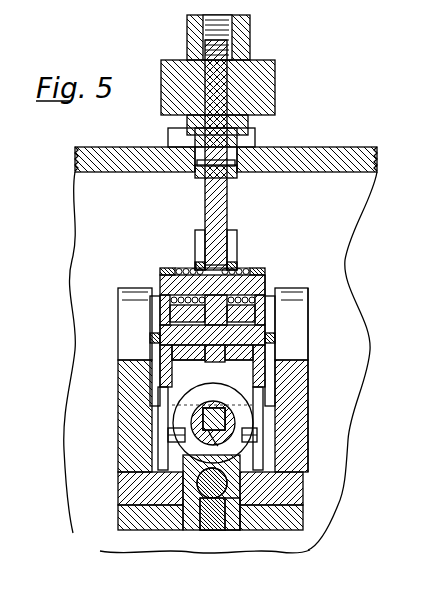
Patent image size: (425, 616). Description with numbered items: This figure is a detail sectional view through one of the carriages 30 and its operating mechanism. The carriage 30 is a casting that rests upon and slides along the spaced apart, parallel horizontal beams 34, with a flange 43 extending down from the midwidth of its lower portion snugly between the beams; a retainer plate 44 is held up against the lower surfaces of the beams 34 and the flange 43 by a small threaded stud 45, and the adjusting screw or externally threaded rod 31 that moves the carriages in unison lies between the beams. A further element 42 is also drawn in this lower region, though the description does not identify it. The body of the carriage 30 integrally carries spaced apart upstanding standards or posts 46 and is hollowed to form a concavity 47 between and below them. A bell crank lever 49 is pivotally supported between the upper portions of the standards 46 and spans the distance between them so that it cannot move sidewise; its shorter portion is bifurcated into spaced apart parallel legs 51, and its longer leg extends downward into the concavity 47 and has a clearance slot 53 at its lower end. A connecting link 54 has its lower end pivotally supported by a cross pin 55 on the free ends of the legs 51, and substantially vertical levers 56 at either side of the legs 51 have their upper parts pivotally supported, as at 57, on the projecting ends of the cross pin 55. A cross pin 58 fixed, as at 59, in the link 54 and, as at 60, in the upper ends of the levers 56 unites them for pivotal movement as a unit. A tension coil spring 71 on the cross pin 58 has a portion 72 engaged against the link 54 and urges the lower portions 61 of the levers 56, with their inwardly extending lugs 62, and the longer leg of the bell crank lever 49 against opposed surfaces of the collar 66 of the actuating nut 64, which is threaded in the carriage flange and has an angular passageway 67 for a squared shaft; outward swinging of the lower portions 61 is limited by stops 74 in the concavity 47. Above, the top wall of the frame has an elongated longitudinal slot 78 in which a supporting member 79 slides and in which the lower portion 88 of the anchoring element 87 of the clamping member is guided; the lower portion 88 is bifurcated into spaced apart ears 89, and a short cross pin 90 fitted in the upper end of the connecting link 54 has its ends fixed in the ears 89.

The anchoring element 87 is at (248, 92).
The lower portion of anchoring element 88 is at (255, 136).
The supporting member 79 is at (285, 147).
The elongated longitudinally extending slot 78 is at (240, 172).
The spaced apart ears 89 is at (198, 178).
The short cross pin 90 is at (200, 168).
The connecting link 54 is at (218, 212).
The length or portion of coil spring 72 is at (237, 242).
The cross pin 58 is at (196, 262).
The fixing of cross pin ends in vertical levers 60 is at (208, 266).
The tension coil spring 71 is at (262, 270).
The bell crank lever 49 is at (162, 280).
The fixing of cross pin in connecting link 59 is at (266, 287).
The upstanding standards or posts 46 is at (118, 294).
The spaced apart parallel legs 51 is at (152, 320).
The pivotal support of vertical levers 57 is at (165, 352).
The substantially vertical levers 56 is at (166, 376).
The cross pin 55 is at (214, 408).
The collar 66 is at (200, 362).
The actuating nut 64 is at (228, 362).
The clearance slot 53 is at (175, 405).
The lower portions of vertical levers 61 is at (240, 414).
The carriage 30 is at (238, 428).
The inwardly extending lug 62 is at (170, 433).
The angular passageway 67 is at (212, 436).
The stops 74 is at (160, 456).
The concavity 47 is at (308, 455).
The horizontal beams 34 is at (118, 480).
The bottom plate 42 is at (118, 512).
The retainer plate 44 is at (240, 530).
The adjusting screw or externally threaded rod 31 is at (199, 492).
The small threaded stud 45 is at (207, 512).
The flange 43 is at (240, 522).